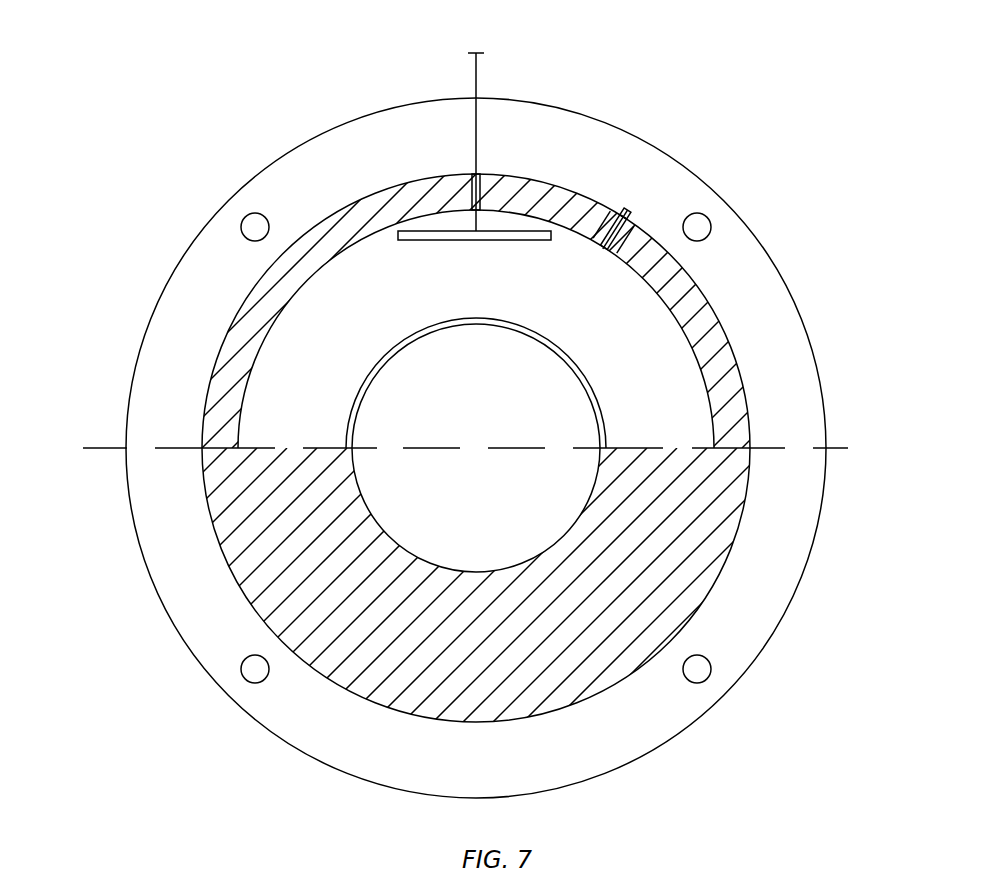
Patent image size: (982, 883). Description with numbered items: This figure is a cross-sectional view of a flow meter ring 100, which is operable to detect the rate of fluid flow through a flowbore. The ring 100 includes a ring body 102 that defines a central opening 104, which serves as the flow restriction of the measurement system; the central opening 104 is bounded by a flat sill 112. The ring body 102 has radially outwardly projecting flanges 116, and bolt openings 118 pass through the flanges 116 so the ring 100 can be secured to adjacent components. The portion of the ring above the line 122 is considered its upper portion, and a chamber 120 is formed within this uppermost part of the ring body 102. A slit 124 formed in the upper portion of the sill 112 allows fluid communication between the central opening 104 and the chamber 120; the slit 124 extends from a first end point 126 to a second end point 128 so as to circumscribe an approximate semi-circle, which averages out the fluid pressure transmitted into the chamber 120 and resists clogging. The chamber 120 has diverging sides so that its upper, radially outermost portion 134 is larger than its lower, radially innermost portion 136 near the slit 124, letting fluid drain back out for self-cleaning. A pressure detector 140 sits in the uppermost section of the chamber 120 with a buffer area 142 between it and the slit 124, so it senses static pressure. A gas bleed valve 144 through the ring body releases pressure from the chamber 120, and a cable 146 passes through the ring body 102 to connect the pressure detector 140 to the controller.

The flow meter ring 100 is at (476, 440).
The ring body 102 is at (725, 327).
The central opening 104 is at (476, 448).
The flat sill 112 is at (365, 502).
The flanges 116 is at (405, 120).
The bolt openings 118 is at (247, 224).
The chamber 120 is at (479, 277).
The line 122 is at (443, 478).
The slit 124 is at (562, 356).
The first end point 126 is at (307, 419).
The second end point 128 is at (627, 422).
The upper, radially outermost portion 134 is at (568, 252).
The lower, radially innermost portion 136 is at (362, 353).
The pressure detector 140 is at (520, 230).
The buffer area 142 is at (544, 309).
The gas bleed valve 144 is at (688, 197).
The cable 146 is at (472, 57).